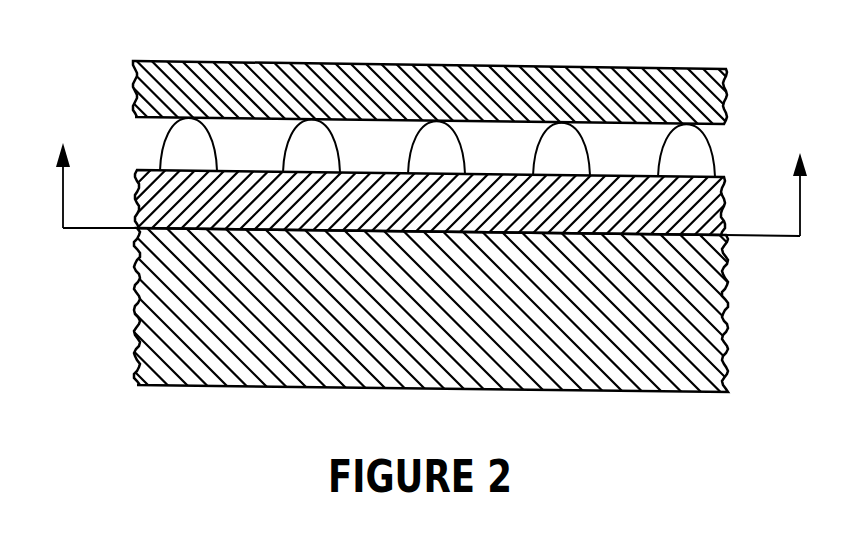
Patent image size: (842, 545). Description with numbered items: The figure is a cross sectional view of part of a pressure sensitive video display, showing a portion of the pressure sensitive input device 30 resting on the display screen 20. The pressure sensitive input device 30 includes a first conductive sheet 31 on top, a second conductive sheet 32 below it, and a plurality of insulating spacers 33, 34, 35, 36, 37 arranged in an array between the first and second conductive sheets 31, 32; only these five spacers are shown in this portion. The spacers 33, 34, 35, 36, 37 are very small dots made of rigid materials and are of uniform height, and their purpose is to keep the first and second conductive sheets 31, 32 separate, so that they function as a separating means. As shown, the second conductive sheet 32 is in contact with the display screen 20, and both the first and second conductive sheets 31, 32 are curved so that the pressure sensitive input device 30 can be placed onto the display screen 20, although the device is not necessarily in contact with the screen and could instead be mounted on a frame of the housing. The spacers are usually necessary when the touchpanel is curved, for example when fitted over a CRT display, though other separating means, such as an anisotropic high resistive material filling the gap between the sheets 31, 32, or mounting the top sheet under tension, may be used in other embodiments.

The display screen 20 is at (738, 310).
The pressure sensitive input device 30 is at (431, 188).
The first conductive sheet 31 is at (615, 67).
The second conductive sheet 32 is at (725, 211).
The insulating spacer 33 is at (715, 156).
The insulating spacer 34 is at (588, 156).
The insulating spacer 35 is at (465, 158).
The insulating spacer 36 is at (340, 153).
The insulating spacer 37 is at (217, 153).